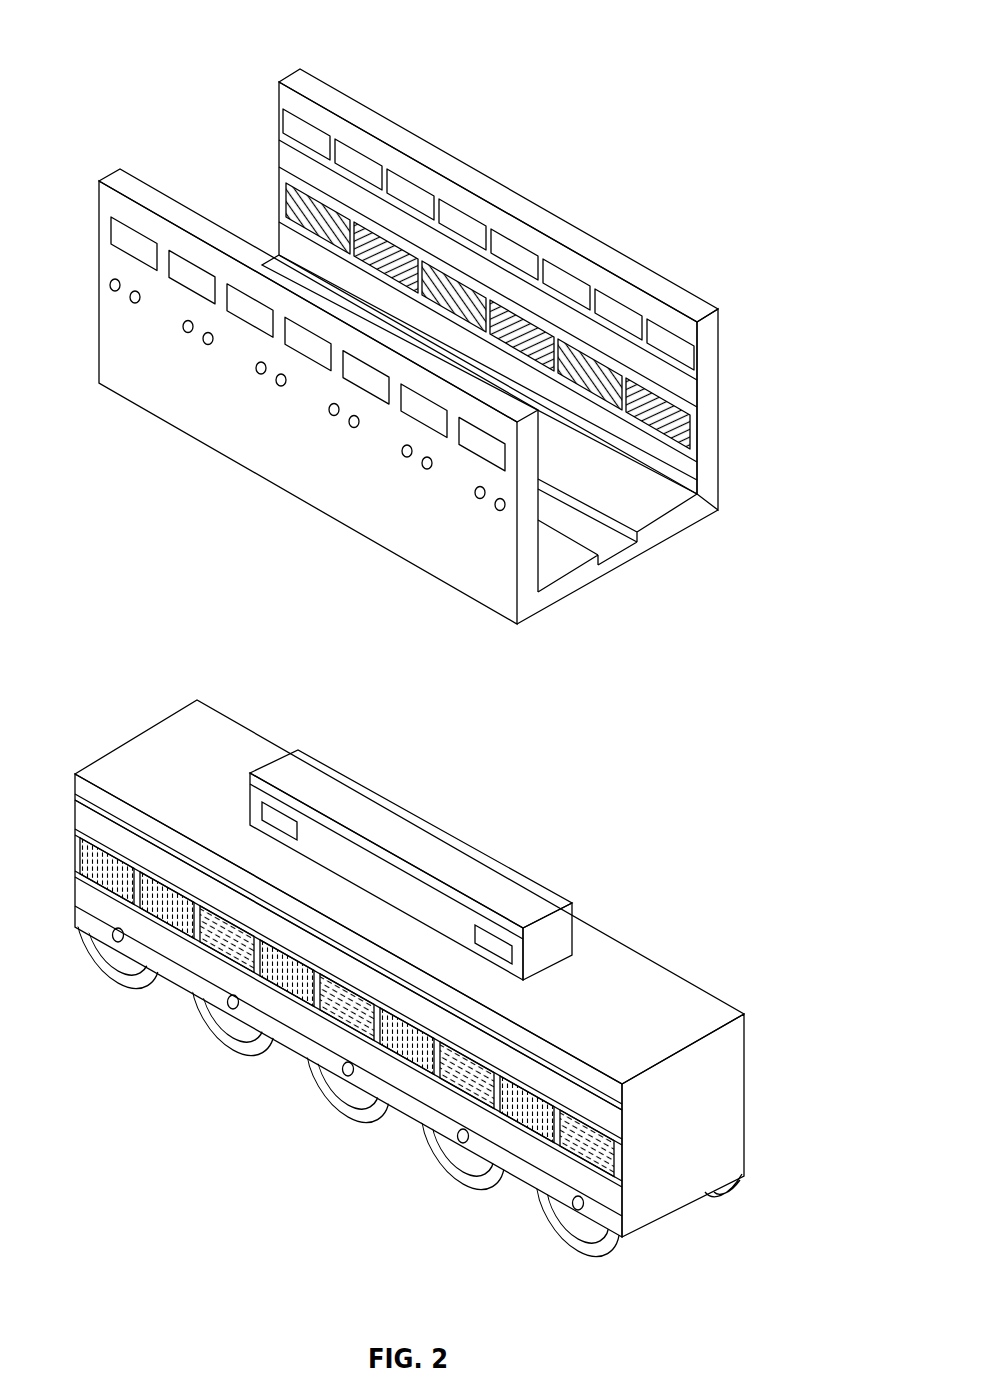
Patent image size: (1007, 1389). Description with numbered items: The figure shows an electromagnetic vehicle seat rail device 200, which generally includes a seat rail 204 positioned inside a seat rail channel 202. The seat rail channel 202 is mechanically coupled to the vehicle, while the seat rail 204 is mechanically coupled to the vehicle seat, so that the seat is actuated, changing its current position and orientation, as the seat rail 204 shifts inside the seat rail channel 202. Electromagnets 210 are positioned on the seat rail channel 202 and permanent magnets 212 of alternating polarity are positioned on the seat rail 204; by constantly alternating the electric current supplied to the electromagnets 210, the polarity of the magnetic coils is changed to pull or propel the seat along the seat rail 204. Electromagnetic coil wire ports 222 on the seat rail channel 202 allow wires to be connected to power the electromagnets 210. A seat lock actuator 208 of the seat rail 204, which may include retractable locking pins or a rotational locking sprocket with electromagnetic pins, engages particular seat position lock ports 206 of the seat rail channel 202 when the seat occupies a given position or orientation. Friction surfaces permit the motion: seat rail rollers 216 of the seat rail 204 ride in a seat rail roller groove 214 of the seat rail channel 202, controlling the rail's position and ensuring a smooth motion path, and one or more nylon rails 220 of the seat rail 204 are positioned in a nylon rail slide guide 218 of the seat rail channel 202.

The electromagnetic vehicle seat rail device 200 is at (776, 30).
The seat rail channel 202 is at (132, 382).
The seat rail 204 is at (702, 1122).
The seat position lock ports 206 is at (300, 126).
The seat lock actuator 208 is at (411, 909).
The electromagnets 210 is at (680, 418).
The permanent magnets 212 is at (169, 888).
The seat rail roller groove 214 is at (597, 537).
The seat rail rollers 216 is at (632, 1256).
The nylon rail slide guide 218 is at (666, 459).
The nylon rails 220 is at (559, 1084).
The electromagnetic coil wire ports 222 is at (262, 388).